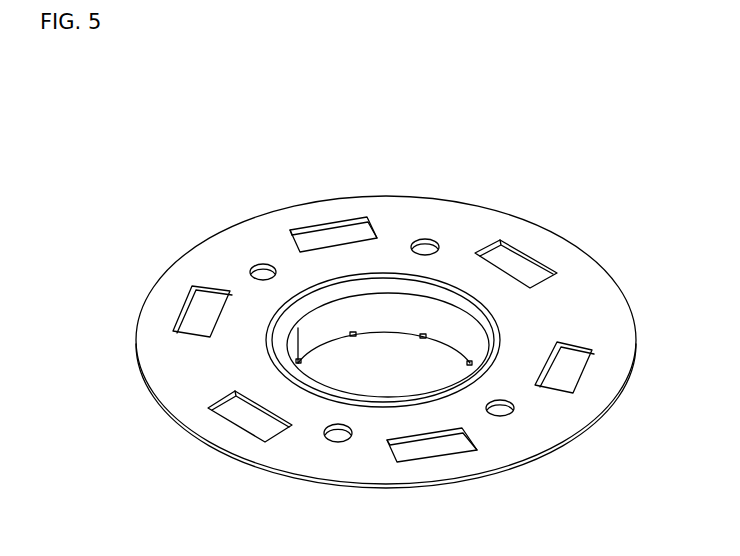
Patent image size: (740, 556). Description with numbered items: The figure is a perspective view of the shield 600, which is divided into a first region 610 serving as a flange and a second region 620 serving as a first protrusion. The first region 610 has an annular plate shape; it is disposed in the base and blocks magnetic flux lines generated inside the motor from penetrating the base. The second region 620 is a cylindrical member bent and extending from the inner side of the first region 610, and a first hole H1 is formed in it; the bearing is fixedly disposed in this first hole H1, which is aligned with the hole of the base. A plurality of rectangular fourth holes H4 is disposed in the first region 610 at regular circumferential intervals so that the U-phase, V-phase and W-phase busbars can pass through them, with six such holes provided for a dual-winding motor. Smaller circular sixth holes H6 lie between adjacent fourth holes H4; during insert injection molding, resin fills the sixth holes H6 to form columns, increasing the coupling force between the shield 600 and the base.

The shield 600 is at (576, 190).
The first region 610 is at (228, 254).
The second region 620 is at (309, 334).
The first hole H1 is at (389, 359).
The fourth hole H4 is at (333, 236).
The sixth hole H6 is at (421, 247).